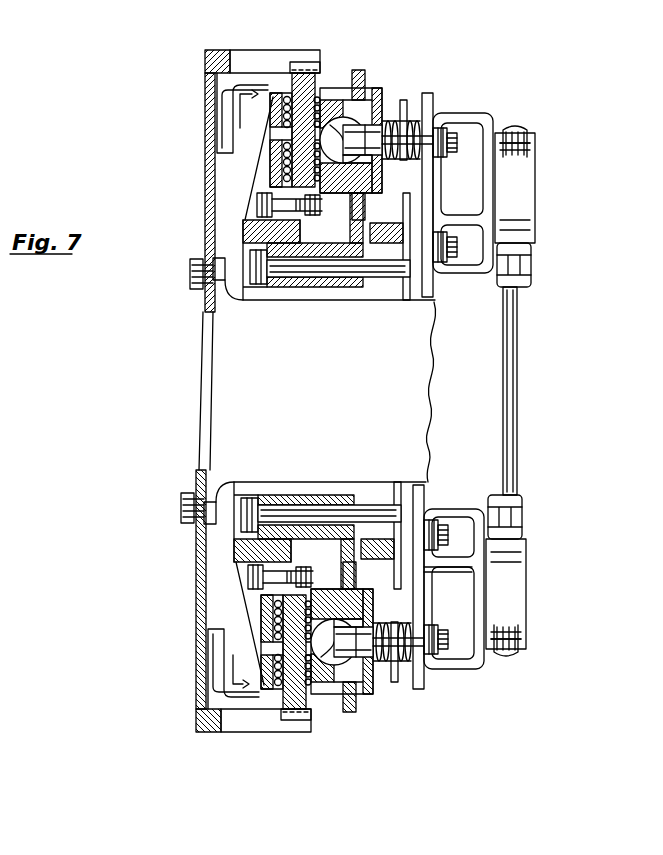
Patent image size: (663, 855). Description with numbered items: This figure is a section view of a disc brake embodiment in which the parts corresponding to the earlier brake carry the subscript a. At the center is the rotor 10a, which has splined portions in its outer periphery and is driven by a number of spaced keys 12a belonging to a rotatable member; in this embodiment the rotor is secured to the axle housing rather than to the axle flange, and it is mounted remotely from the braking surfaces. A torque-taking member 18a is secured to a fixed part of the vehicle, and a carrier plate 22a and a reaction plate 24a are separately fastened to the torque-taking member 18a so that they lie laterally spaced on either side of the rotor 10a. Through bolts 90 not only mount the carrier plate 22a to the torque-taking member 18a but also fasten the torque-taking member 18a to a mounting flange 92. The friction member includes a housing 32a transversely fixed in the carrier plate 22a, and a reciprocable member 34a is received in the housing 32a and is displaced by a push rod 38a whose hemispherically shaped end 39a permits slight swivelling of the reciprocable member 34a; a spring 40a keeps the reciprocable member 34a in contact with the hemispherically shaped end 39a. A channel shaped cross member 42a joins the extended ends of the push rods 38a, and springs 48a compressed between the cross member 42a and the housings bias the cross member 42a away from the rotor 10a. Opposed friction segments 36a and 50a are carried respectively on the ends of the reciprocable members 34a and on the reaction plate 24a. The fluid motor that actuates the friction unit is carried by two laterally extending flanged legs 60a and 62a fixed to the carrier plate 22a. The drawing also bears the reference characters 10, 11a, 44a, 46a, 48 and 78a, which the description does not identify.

The section view arrow 10 is at (253, 403).
The rotor 10a is at (318, 73).
The block 11a is at (300, 62).
The keys 12a is at (204, 50).
The torque-taking member 18a is at (315, 284).
The carrier plate 22a is at (356, 258).
The reaction plate 24a is at (263, 175).
The housing 32a is at (368, 703).
The reciprocable members 34a is at (327, 598).
The friction segment 36a is at (362, 186).
The push rods 38a is at (370, 130).
The hemispherically shaped ends 39a is at (358, 70).
The springs 40a is at (353, 124).
The cross member 42a is at (415, 602).
The bolt 44a is at (447, 152).
The spring 46a is at (421, 120).
The plate 48 is at (430, 93).
The springs 48a is at (388, 622).
The friction segment 50a is at (272, 160).
The flanged leg 60a is at (470, 114).
The flanged leg 62a is at (470, 265).
The connecting rod 78a is at (512, 382).
The through bolts 90 is at (296, 282).
The mounting flange 92 is at (388, 244).